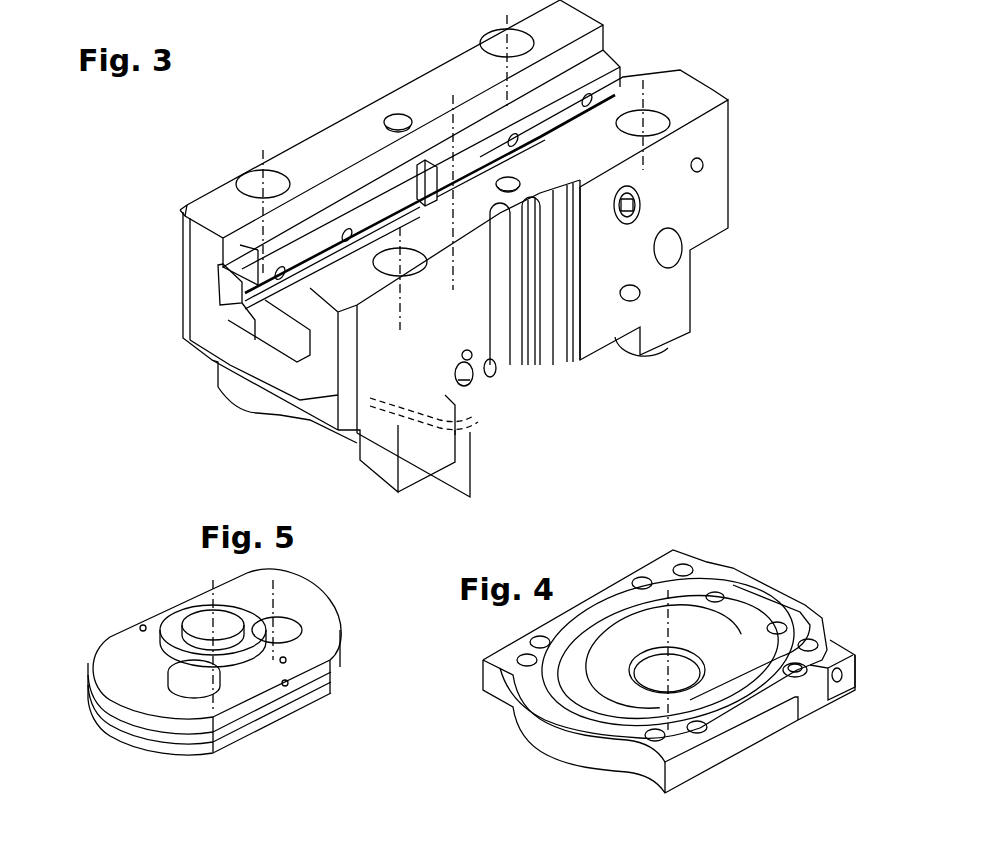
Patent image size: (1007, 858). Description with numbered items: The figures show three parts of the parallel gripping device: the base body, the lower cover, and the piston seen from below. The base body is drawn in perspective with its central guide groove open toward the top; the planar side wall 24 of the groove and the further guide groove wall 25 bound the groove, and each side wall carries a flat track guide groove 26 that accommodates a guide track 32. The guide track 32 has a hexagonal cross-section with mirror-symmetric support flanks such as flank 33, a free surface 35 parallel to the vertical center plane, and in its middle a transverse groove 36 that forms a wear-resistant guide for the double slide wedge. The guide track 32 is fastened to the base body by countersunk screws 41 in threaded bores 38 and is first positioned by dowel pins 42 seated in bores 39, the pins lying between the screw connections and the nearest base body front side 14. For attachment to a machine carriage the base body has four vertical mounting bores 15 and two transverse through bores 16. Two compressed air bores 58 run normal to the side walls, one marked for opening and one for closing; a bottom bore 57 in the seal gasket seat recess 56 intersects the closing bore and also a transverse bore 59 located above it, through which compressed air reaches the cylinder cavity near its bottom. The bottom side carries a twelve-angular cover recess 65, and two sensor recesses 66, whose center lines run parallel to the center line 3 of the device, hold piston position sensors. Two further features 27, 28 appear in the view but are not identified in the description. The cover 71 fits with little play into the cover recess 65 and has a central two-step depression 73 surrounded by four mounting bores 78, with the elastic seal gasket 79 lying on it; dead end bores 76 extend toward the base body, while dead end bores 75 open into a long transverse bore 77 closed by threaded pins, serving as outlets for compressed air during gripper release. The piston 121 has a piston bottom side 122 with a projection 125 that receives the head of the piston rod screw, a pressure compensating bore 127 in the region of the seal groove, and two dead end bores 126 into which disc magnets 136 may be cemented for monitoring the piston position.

In FIG. 3, the center line of the device 3 is at (690, 125).
In FIG. 3, the base body front side 14 is at (260, 363).
In FIG. 3, the vertical mounting bores 15 is at (505, 42).
In FIG. 3, the transverse through bores 16 is at (668, 248).
In FIG. 3, the side wall of the guide groove 24 is at (237, 248).
In FIG. 3, the guide groove wall 25 is at (265, 328).
In FIG. 3, the track guide groove 26 is at (220, 285).
In FIG. 3, the screw 27 is at (643, 197).
In FIG. 3, the hole 28 is at (700, 163).
In FIG. 3, the guide track 32 is at (230, 295).
In FIG. 3, the support flank 33 is at (192, 225).
In FIG. 3, the free surface 35 is at (250, 305).
In FIG. 3, the transverse groove 36 is at (345, 233).
In FIG. 3, the threaded bores 38 is at (283, 247).
In FIG. 3, the bores for the dowel pins 39 is at (625, 78).
In FIG. 3, the countersunk screws 41 is at (640, 213).
In FIG. 3, the dowel pins 42 is at (705, 167).
In FIG. 3, the seal gasket seat recess 56 is at (385, 403).
In FIG. 3, the bottom bores 57 is at (455, 427).
In FIG. 3, the compressed air bore 58 is at (637, 288).
In FIG. 3, the transverse bore 59 is at (490, 372).
In FIG. 3, the cover recess 65 is at (595, 350).
In FIG. 3, the sensor recesses 66 is at (560, 267).
In FIG. 4, the cover 71 is at (757, 554).
In FIG. 4, the two-step depression 73 is at (625, 680).
In FIG. 4, the dead end bores 75 is at (778, 627).
In FIG. 4, the dead end bores 76 is at (653, 735).
In FIG. 4, the long transverse bore 77 is at (837, 677).
In FIG. 4, the mounting bores 78 is at (795, 670).
In FIG. 4, the seal gasket 79 is at (770, 585).
In FIG. 5, the piston 121 is at (107, 618).
In FIG. 5, the piston bottom side 122 is at (250, 588).
In FIG. 5, the projection 125 is at (230, 653).
In FIG. 5, the dead end bores 126 is at (187, 685).
In FIG. 5, the pressure compensating bore 127 is at (283, 685).
In FIG. 5, the disc magnets 136 is at (290, 635).